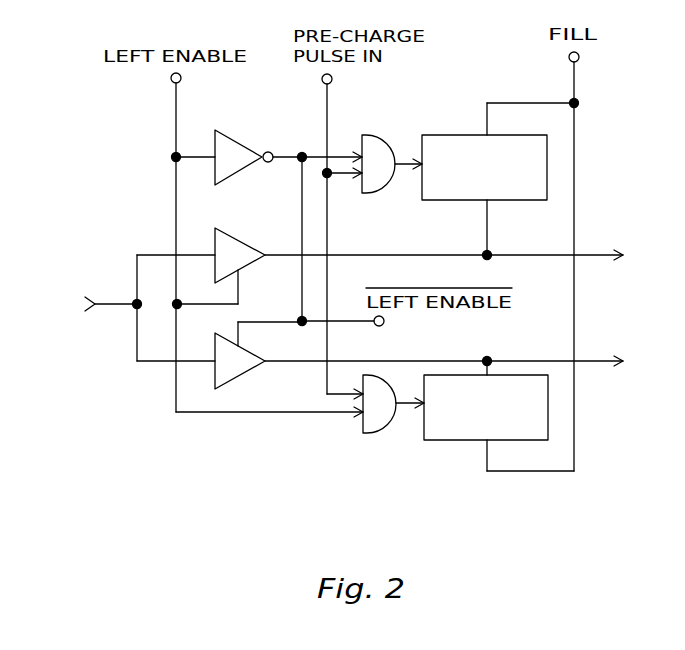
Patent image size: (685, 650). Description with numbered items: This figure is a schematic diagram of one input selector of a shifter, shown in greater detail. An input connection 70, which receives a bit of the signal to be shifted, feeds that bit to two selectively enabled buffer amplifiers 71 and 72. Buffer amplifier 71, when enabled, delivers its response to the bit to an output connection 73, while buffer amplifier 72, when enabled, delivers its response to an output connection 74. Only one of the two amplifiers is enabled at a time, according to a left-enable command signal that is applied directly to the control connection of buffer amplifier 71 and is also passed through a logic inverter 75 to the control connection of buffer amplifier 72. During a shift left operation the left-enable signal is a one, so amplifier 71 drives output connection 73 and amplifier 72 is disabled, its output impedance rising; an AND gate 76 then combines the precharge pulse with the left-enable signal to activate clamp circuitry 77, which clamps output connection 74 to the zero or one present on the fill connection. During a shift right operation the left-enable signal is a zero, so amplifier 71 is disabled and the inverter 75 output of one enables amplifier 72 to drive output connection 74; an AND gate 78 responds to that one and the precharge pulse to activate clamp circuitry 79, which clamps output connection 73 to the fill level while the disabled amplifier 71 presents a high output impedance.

The input connection 70 is at (101, 300).
The buffer amplifier 71 is at (246, 246).
The buffer amplifier 72 is at (254, 374).
The output connection 73 is at (621, 248).
The output connection 74 is at (621, 357).
The logic inverter 75 is at (251, 141).
The AND gate 76 is at (385, 434).
The clamp circuitry 77 is at (530, 441).
The AND gate 78 is at (381, 196).
The clamp circuitry 79 is at (517, 201).